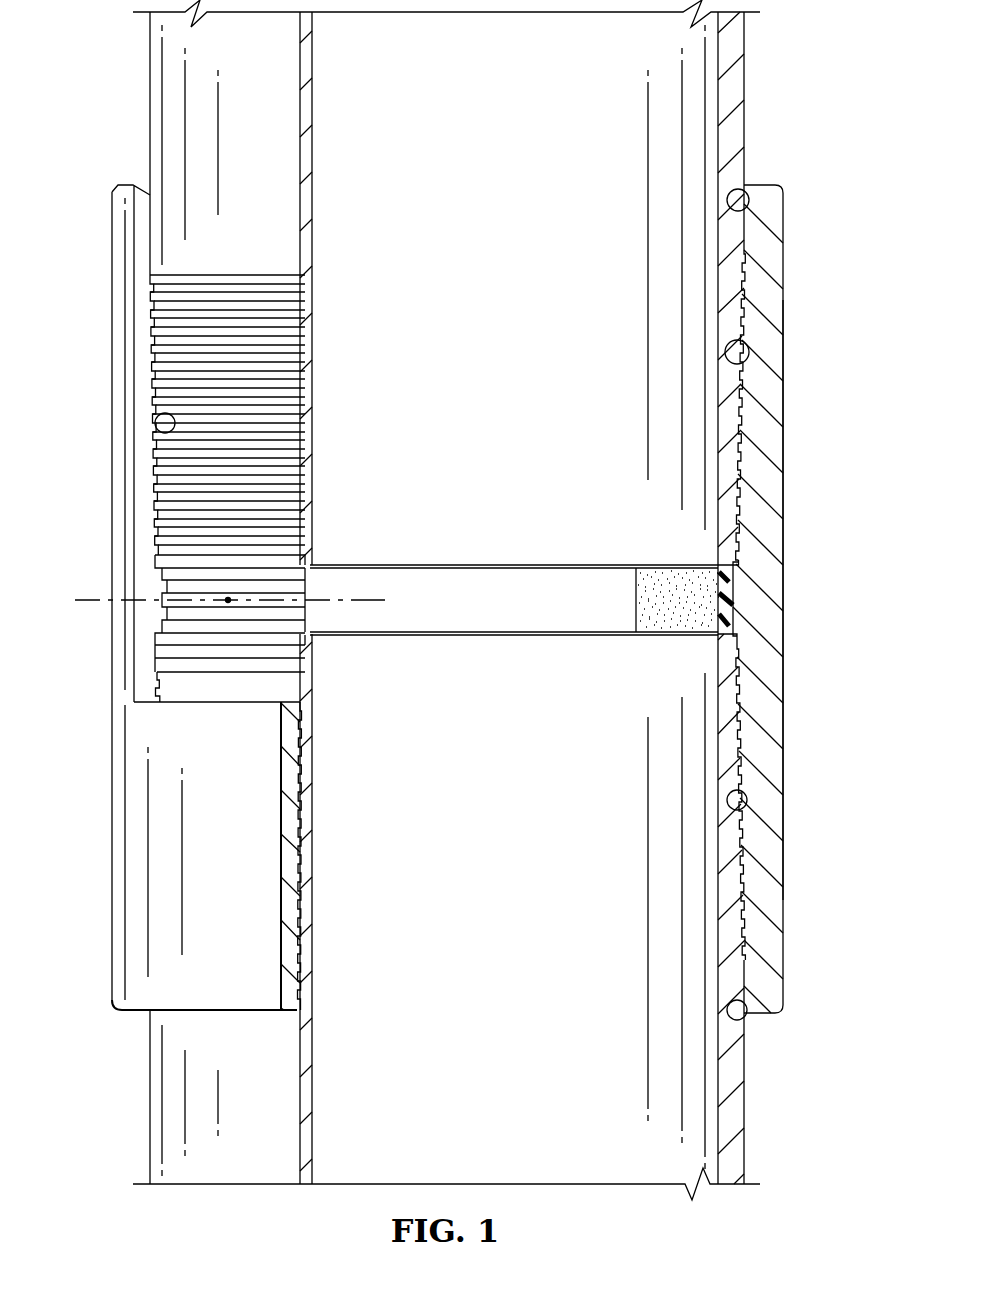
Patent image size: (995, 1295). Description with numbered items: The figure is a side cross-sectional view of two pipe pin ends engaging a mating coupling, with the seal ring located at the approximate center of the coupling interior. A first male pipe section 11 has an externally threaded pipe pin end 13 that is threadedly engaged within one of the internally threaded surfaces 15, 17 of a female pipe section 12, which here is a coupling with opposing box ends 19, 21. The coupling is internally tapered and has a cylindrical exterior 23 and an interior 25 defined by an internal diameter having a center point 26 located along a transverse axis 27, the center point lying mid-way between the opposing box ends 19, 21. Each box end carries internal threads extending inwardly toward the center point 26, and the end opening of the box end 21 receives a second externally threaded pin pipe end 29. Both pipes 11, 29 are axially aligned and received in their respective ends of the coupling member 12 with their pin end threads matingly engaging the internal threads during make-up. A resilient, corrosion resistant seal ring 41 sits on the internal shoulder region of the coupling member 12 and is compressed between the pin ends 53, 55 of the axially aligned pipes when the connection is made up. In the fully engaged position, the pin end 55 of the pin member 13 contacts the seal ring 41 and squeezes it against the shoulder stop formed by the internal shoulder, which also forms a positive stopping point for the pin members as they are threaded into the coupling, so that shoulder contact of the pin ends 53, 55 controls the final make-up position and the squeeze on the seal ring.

The first male pipe section 11 is at (735, 80).
The female pipe section 12 is at (773, 497).
The pipe pin end 13 is at (728, 423).
The internally threaded surface 15 is at (749, 340).
The internally threaded surface 17 is at (746, 805).
The box end 19 is at (748, 190).
The box end 21 is at (747, 1021).
The cylindrical exterior 23 is at (785, 873).
The interior 25 is at (156, 424).
The center point 26 is at (228, 603).
The transverse axis 27 is at (80, 594).
The second pin pipe end 29 is at (737, 1100).
The seal ring 41 is at (663, 627).
The pipe pin end 53 is at (727, 642).
The pin end 55 is at (728, 556).